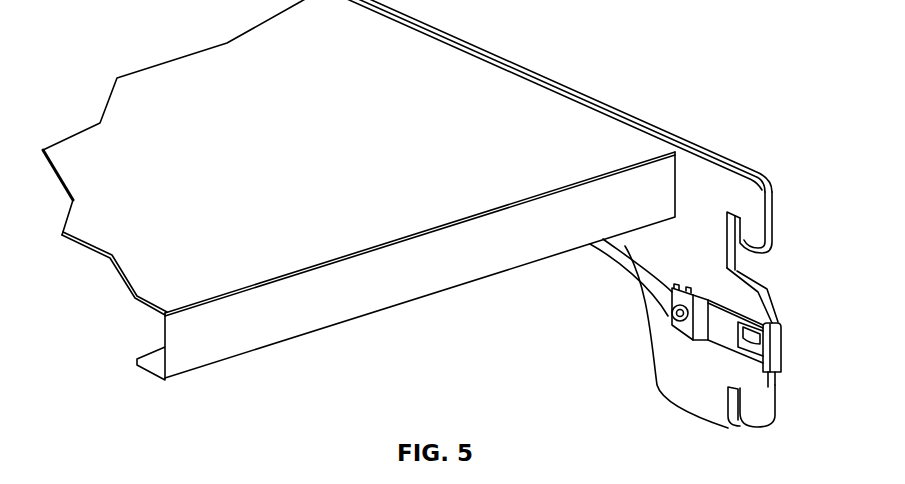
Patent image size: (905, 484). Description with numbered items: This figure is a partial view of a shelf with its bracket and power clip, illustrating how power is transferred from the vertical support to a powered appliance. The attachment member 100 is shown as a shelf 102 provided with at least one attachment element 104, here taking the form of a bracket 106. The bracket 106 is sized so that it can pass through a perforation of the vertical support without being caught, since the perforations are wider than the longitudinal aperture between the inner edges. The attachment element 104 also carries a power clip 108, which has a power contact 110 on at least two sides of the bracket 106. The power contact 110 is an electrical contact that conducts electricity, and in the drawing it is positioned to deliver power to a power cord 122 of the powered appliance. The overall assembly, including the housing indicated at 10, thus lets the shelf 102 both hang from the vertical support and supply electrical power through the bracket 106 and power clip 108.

The electronic device housing 10 is at (359, 190).
The attachment member 100 is at (492, 53).
The shelf 102 is at (107, 245).
The attachment element 104 is at (747, 193).
The bracket 106 is at (757, 228).
The power clip 108 is at (733, 338).
The power contact 110 is at (762, 337).
The power cord 122 is at (647, 281).